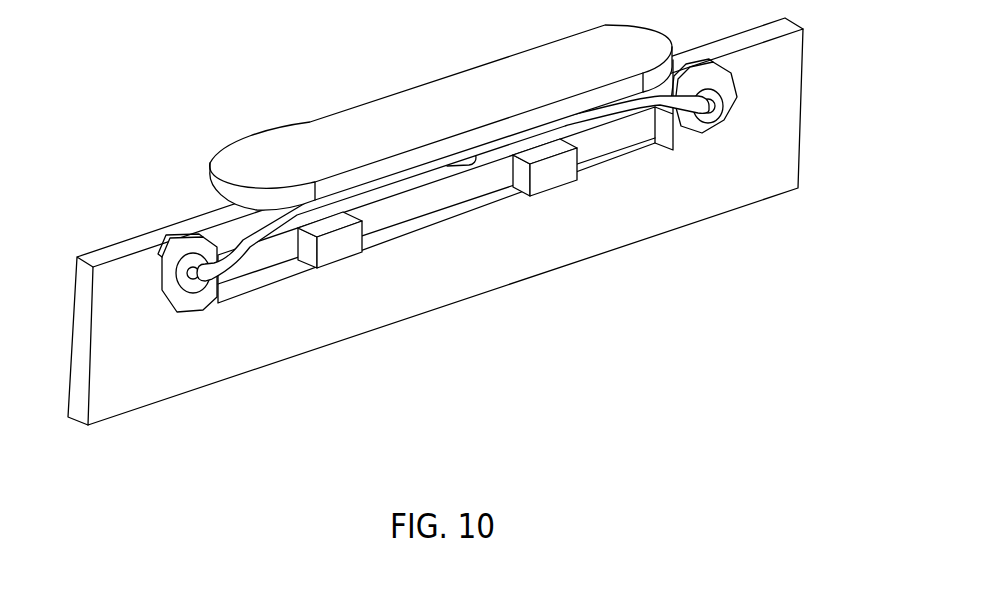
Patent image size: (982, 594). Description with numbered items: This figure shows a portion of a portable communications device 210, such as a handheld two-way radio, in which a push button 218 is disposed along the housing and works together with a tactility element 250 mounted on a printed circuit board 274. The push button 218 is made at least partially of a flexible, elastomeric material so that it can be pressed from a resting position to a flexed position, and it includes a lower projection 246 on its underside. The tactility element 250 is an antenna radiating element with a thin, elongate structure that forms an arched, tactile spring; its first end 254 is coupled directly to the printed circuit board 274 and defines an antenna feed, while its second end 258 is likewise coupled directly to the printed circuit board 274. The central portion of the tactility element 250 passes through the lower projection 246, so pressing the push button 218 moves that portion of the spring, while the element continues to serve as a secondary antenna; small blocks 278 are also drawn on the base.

The portable communications device 210 is at (141, 79).
The push button 218 is at (388, 81).
The lower projection 246 is at (448, 172).
The tactility element 250 is at (234, 223).
The first end 254 is at (708, 114).
The second end 258 is at (195, 280).
The printed circuit board 274 is at (783, 123).
The spacer blocks 278 is at (333, 250).